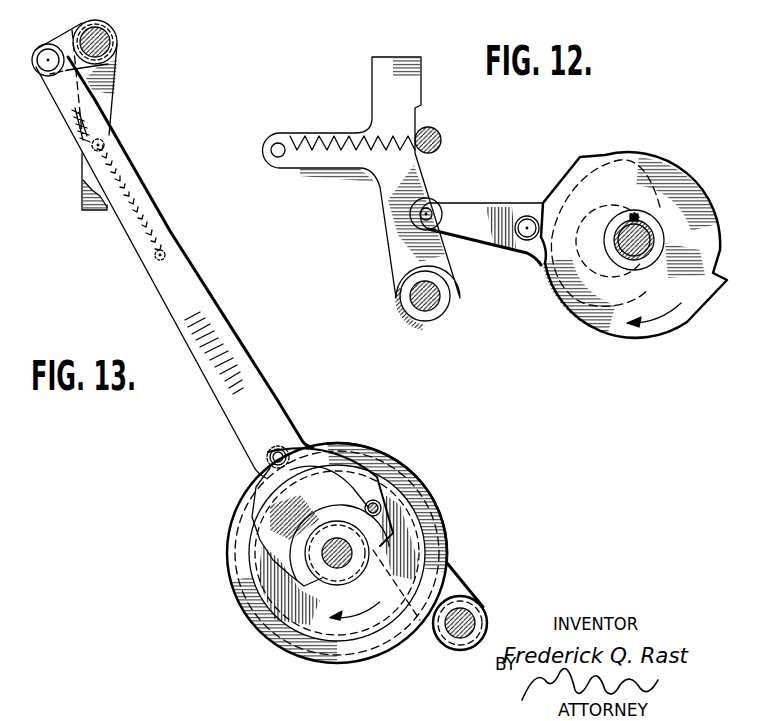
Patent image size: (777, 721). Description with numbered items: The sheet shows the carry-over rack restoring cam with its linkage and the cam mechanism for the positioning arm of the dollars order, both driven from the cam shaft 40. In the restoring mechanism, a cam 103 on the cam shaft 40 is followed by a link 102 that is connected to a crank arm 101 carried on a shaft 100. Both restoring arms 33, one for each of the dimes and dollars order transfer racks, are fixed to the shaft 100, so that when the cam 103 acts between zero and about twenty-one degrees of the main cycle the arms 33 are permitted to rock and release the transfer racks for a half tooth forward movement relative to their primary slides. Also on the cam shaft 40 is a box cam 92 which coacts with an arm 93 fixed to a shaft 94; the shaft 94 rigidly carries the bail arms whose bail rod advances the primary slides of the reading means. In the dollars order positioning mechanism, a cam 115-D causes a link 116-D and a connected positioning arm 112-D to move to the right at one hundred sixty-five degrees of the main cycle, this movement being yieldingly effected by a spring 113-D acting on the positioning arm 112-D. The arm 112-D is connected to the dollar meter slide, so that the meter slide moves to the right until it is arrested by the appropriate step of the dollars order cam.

In FIG. 13, the restoring arm 33 is at (108, 98).
In FIG. 13, the cam shaft 40 is at (337, 563).
In FIG. 12, the cam shaft 40 is at (651, 238).
In FIG. 13, the box cam 92 is at (437, 540).
In FIG. 13, the arm 93 is at (455, 583).
In FIG. 13, the shaft 94 is at (477, 617).
In FIG. 13, the shaft 100 is at (105, 43).
In FIG. 13, the crank arm 101 is at (60, 38).
In FIG. 13, the link 102 is at (168, 292).
In FIG. 13, the cam 103 is at (270, 593).
In FIG. 12, the positioning arm 112-D is at (395, 205).
In FIG. 12, the spring 113-D is at (315, 138).
In FIG. 12, the cam 115-D is at (687, 190).
In FIG. 12, the link 116-D is at (477, 207).